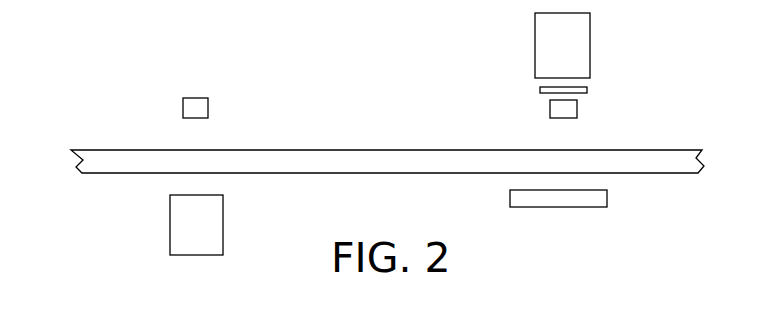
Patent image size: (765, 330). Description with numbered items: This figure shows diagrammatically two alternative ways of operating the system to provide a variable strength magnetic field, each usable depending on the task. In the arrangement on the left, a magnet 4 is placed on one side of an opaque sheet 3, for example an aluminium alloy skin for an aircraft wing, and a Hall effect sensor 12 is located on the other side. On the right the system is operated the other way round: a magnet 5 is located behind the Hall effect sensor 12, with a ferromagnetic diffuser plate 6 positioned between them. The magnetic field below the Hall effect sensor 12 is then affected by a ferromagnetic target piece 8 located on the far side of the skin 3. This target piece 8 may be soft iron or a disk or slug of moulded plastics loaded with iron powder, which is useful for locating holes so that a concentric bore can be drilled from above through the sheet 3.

The opaque sheet 3 is at (113, 150).
The magnet 4 is at (170, 208).
The magnet 5 is at (590, 25).
The ferromagnetic diffuser plate 6 is at (540, 90).
The ferromagnetic target piece 8 is at (607, 198).
The Hall effect sensor 12 is at (208, 107).